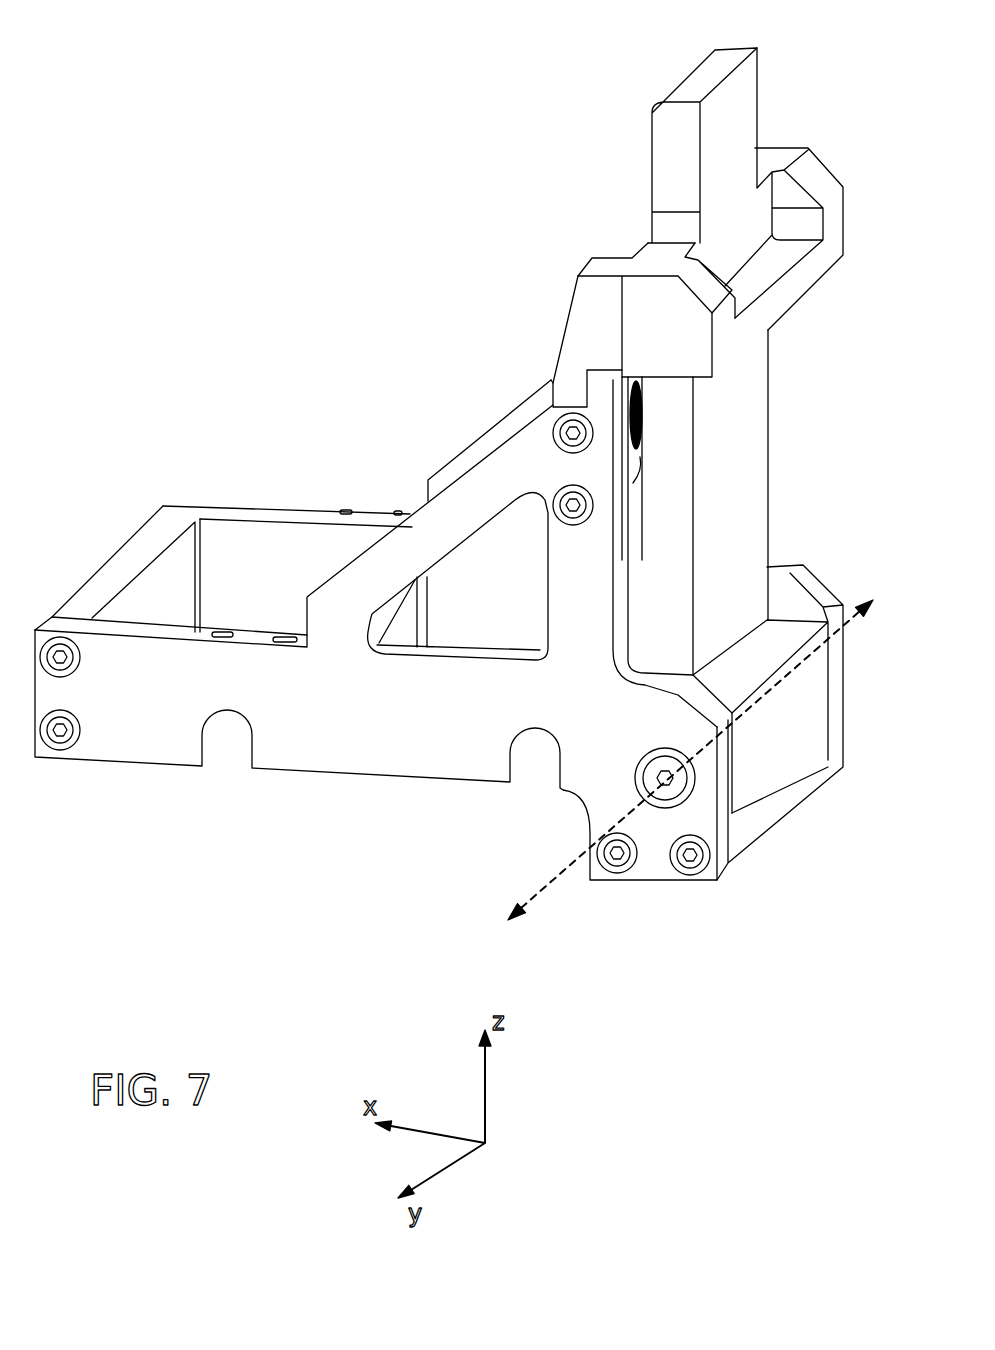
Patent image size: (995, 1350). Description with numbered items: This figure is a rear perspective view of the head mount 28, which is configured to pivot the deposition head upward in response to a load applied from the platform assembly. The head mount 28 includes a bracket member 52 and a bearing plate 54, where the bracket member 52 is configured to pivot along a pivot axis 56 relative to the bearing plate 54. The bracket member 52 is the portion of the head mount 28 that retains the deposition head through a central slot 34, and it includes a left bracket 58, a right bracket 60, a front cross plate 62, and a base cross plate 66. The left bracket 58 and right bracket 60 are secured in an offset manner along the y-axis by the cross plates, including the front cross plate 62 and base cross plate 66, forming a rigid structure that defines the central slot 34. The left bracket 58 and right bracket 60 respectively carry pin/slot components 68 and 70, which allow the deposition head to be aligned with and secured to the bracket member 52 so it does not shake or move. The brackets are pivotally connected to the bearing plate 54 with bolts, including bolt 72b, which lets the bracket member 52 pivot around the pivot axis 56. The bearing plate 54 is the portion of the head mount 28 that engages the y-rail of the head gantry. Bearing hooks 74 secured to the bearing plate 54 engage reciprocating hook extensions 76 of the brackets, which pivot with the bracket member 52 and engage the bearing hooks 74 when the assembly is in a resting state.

The head mount 28 is at (230, 173).
The central slot 34 is at (168, 583).
The bracket member 52 is at (226, 838).
The bearing plate 54 is at (757, 425).
The pivot axis 56 is at (862, 597).
The left bracket 58 is at (265, 512).
The right bracket 60 is at (350, 752).
The front cross plate 62 is at (153, 535).
The base cross plate 66 is at (783, 795).
The pin/slot components 68 is at (347, 500).
The pin/slot components 70 is at (276, 622).
The bolt 72b is at (670, 793).
The bearing hooks 74 is at (583, 322).
The hook extensions 76 is at (595, 400).